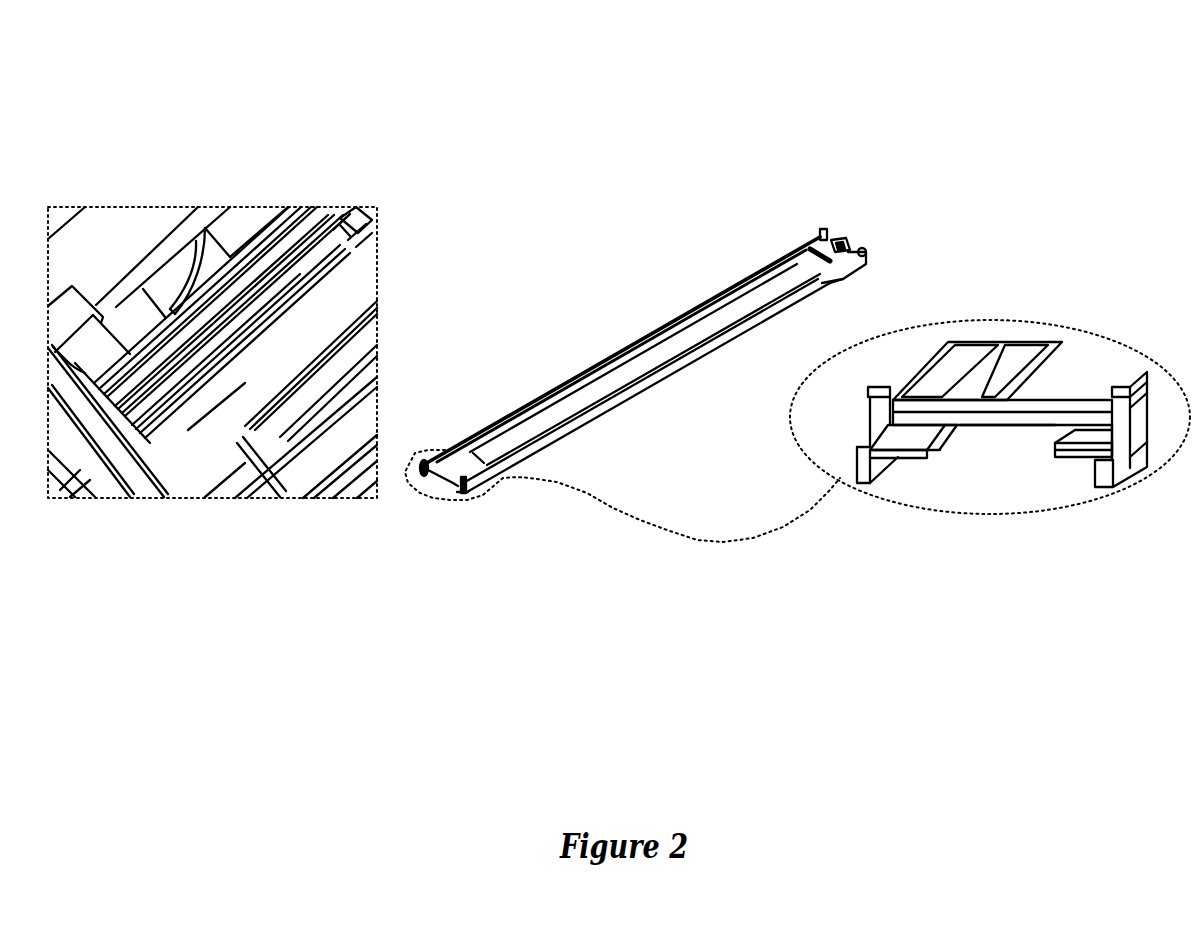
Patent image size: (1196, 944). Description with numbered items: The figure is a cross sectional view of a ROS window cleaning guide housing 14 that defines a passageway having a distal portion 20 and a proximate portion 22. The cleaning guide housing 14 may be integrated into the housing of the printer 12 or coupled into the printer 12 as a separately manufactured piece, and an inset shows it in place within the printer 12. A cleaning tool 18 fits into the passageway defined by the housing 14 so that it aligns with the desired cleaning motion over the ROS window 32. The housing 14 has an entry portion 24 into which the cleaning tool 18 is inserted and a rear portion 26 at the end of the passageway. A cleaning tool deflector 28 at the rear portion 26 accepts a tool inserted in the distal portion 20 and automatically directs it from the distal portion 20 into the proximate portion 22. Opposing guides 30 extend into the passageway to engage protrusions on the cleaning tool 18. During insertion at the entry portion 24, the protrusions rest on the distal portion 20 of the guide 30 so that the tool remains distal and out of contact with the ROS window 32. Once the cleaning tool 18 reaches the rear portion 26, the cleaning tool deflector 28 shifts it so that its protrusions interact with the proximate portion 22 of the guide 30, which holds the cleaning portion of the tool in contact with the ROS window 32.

The printer 12 is at (302, 404).
The ROS window cleaning guide housing 14 is at (304, 244).
The cleaning tool 18 is at (233, 322).
The distal portion 20 is at (882, 439).
The proximate portion 22 is at (895, 474).
The entry portion 24 is at (451, 436).
The rear portion 26 is at (863, 163).
The cleaning tool deflector 28 is at (851, 234).
The guide 30 is at (948, 450).
The ROS window 32 is at (976, 495).